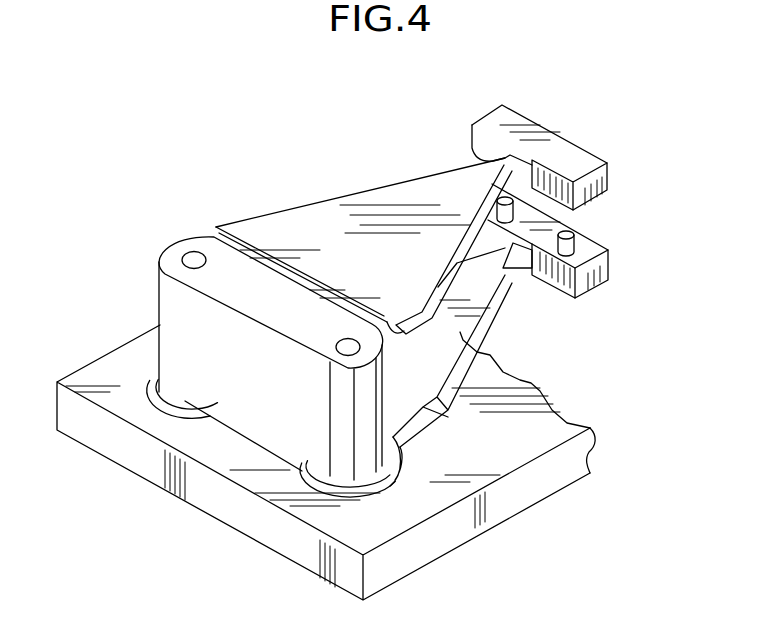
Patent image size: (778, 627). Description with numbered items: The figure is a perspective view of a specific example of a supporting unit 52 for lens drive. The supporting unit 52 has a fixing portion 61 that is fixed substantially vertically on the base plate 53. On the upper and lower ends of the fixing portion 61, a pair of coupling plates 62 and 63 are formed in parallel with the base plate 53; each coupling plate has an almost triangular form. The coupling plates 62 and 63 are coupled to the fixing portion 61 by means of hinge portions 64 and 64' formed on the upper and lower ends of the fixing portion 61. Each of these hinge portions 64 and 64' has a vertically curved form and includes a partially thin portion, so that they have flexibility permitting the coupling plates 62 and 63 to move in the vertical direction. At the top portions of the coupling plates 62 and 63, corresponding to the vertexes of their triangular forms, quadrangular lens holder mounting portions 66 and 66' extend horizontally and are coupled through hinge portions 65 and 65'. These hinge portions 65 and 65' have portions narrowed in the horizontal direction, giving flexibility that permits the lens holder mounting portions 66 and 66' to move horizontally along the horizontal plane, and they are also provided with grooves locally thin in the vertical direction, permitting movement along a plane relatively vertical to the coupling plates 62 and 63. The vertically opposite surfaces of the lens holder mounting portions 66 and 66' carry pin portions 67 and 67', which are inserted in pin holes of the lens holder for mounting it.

The supporting unit 52 is at (148, 254).
The base plate 53 is at (125, 447).
The fixing portion 61 is at (173, 345).
The coupling plate 62 is at (395, 212).
The coupling plate 63 is at (463, 334).
The hinge portion 64 is at (393, 292).
The hinge portion 64' is at (370, 468).
The hinge portion 65 is at (475, 142).
The hinge portion 65' is at (526, 294).
The lens holder mounting portion 66 is at (570, 157).
The lens holder mounting portion 66' is at (587, 250).
The pin portion 67 is at (585, 206).
The pin portion 67' is at (622, 239).